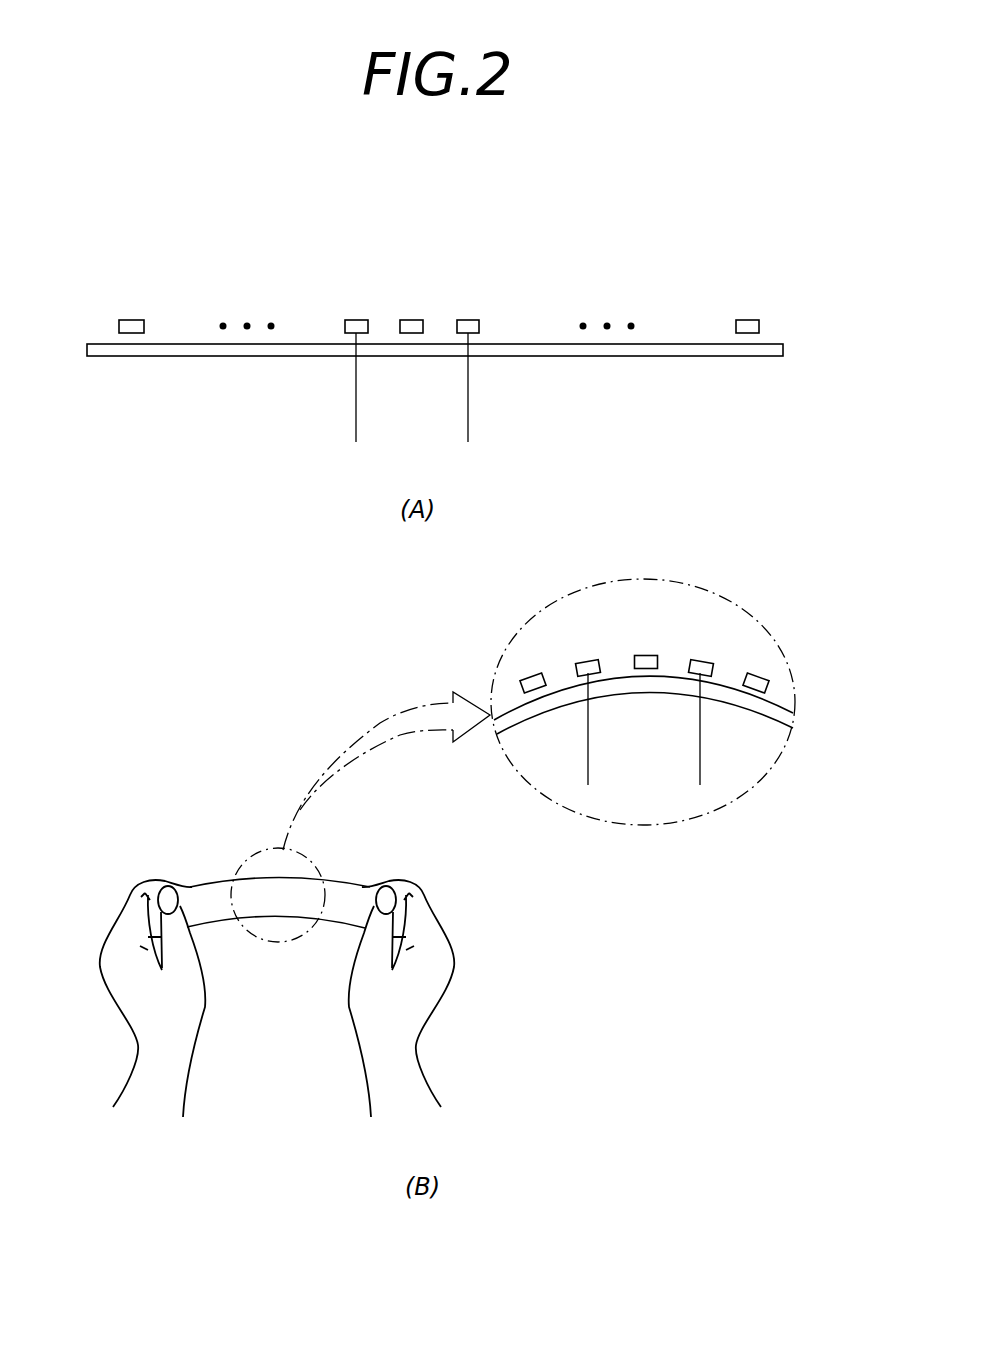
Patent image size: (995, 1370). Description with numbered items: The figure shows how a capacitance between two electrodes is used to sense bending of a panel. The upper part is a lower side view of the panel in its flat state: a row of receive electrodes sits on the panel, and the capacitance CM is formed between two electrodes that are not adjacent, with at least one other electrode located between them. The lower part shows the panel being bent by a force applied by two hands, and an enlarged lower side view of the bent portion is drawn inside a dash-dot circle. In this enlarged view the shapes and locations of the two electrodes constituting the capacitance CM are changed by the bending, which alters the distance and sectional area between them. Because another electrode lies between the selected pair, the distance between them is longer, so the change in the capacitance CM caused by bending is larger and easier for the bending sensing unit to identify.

The capacitance CM is at (458, 397).